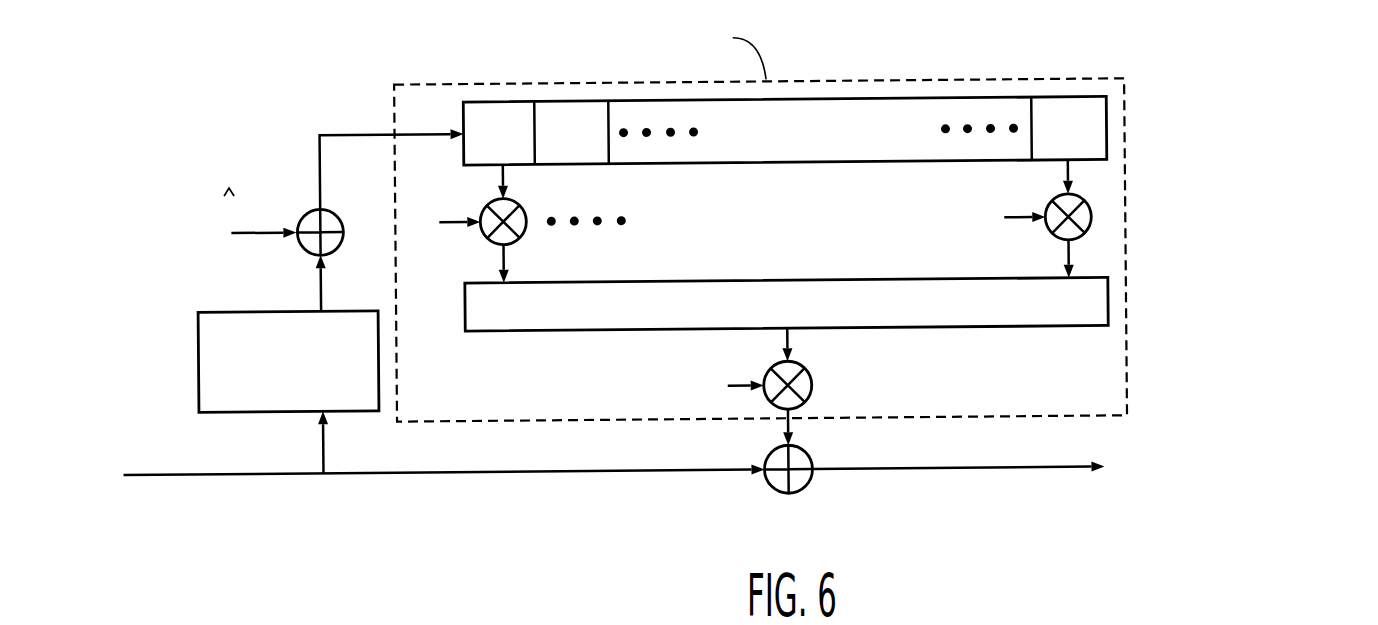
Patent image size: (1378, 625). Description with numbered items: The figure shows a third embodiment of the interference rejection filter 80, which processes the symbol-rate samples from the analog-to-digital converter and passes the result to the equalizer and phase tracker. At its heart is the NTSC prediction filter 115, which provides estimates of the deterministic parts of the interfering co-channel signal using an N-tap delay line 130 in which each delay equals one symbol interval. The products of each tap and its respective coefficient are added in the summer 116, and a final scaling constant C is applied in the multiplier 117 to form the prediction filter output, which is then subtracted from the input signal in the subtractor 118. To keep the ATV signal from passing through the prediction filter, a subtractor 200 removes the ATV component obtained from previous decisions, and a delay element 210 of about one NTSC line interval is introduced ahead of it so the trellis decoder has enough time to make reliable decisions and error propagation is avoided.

The interference rejection filter 80 is at (704, 275).
The prediction filter 115 is at (810, 82).
The N-tap delay line 130 is at (976, 110).
The summer 116 is at (843, 281).
The multiplier 117 is at (811, 381).
The subtractor 118 is at (804, 489).
The subtractor 200 is at (308, 250).
The delay element 210 is at (198, 337).